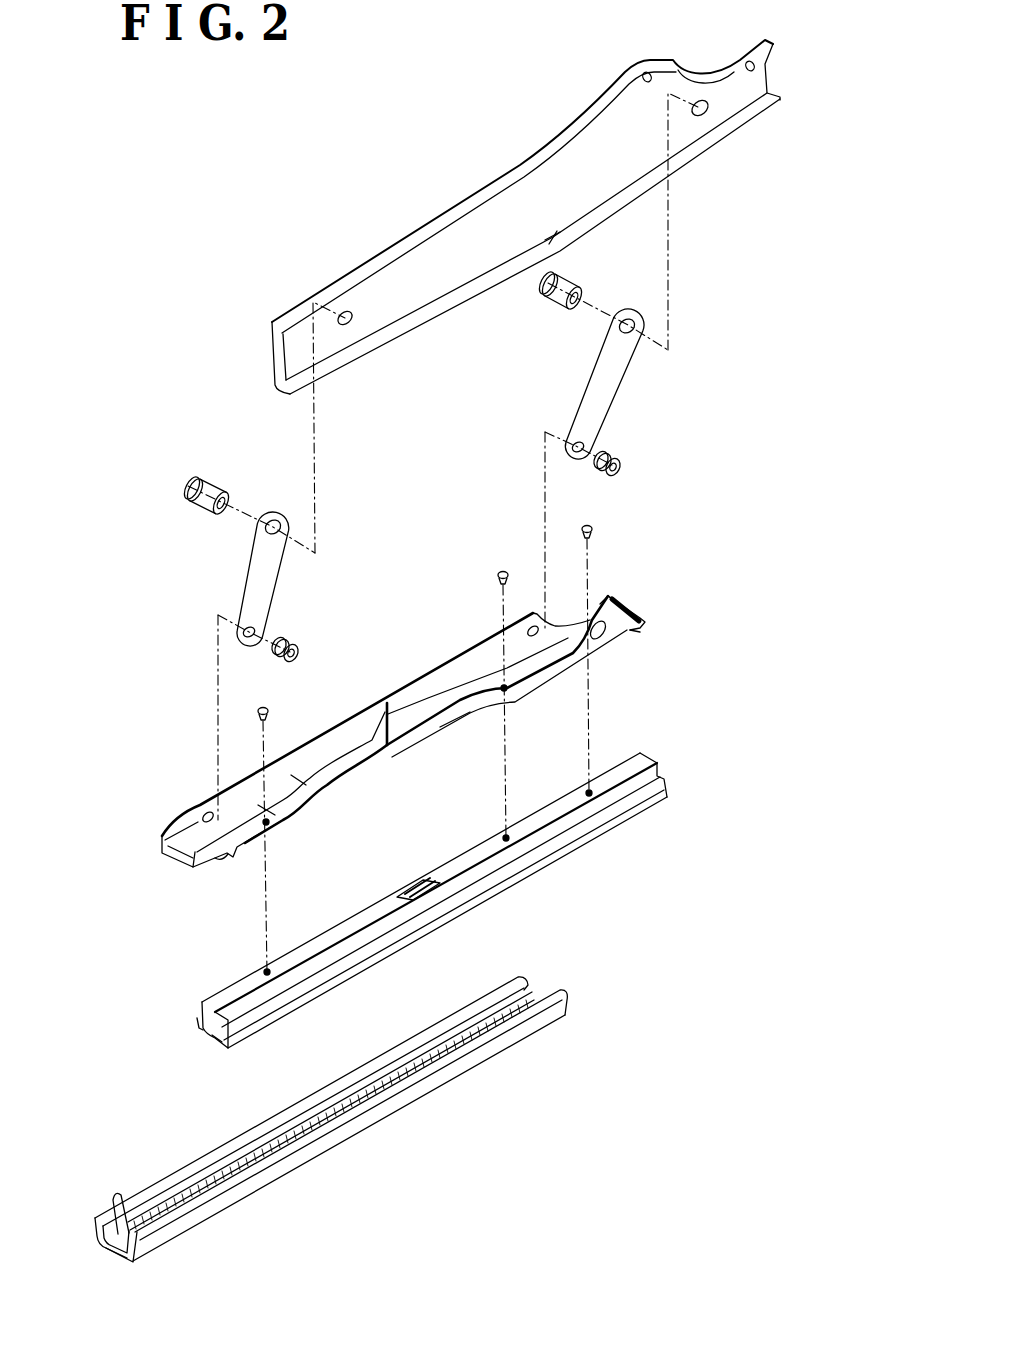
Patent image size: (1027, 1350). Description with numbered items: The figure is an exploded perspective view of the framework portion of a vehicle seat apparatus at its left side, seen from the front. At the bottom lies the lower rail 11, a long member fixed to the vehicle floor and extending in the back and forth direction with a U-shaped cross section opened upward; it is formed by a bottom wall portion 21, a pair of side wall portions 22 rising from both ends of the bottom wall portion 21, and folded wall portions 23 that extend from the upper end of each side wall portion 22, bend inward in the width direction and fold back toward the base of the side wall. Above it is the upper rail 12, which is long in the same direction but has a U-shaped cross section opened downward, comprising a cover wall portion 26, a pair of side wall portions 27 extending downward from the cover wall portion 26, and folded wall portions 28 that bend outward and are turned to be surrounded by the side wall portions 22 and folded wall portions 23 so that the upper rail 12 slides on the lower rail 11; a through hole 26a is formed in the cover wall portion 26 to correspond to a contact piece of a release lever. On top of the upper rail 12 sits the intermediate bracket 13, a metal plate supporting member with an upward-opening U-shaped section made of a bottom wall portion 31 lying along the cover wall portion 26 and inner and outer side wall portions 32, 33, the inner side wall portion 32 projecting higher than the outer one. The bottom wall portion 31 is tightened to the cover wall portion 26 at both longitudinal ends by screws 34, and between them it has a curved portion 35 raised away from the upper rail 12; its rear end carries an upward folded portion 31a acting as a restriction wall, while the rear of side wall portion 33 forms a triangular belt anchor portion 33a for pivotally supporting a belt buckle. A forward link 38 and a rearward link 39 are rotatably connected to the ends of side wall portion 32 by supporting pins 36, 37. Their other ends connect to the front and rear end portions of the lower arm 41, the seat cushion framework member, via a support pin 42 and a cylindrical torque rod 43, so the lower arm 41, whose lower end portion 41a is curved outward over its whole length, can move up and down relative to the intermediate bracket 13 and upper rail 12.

The lower rail 11 is at (302, 1129).
The upper rail 12 is at (401, 921).
The intermediate bracket 13 is at (636, 637).
The bottom wall portion 21 is at (108, 1253).
The side wall portions 22 is at (94, 1223).
The folded wall portions 23 is at (121, 1216).
The cover wall portion 26 is at (250, 973).
The through hole 26a is at (418, 880).
The side wall portions 27 is at (209, 1038).
The folded wall portions 28 is at (196, 1023).
The bottom wall portion 31 is at (258, 805).
The folded portion 31a is at (646, 608).
The side wall portion 32 is at (192, 830).
The side wall portion 33 is at (231, 860).
The belt anchor portion 33a is at (606, 594).
The screws 34 is at (497, 574).
The curved portion 35 is at (451, 720).
The supporting pin 36 is at (301, 654).
The supporting pin 37 is at (623, 468).
The forward link 38 is at (267, 581).
The rearward link 39 is at (606, 384).
The lower arm 41 is at (478, 220).
The lower end portion 41a is at (471, 280).
The support pin 42 is at (203, 515).
The torque rod 43 is at (548, 306).